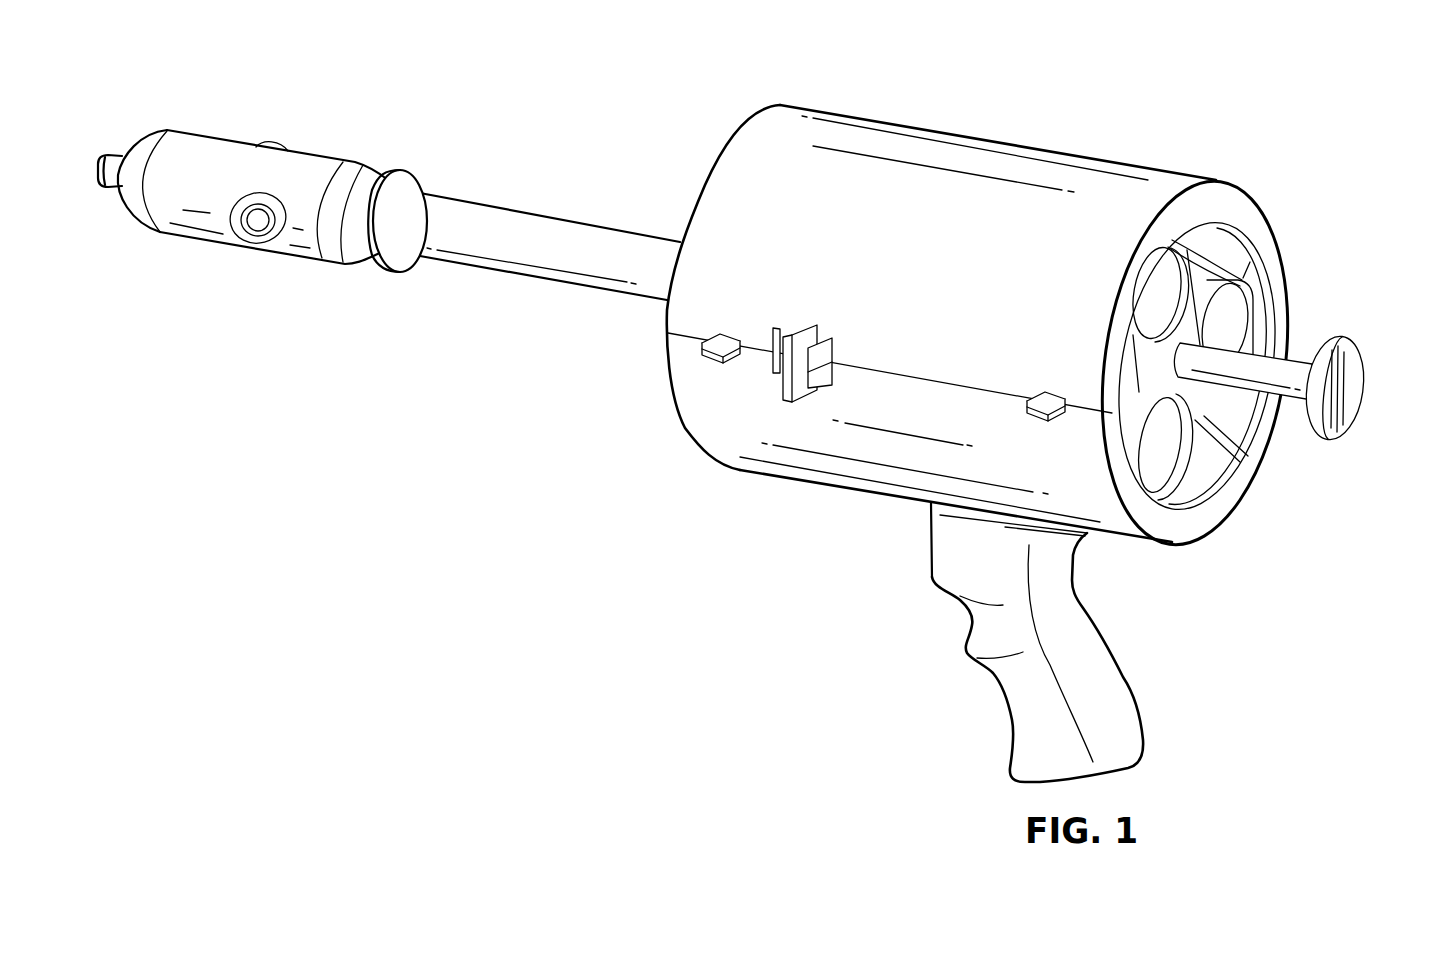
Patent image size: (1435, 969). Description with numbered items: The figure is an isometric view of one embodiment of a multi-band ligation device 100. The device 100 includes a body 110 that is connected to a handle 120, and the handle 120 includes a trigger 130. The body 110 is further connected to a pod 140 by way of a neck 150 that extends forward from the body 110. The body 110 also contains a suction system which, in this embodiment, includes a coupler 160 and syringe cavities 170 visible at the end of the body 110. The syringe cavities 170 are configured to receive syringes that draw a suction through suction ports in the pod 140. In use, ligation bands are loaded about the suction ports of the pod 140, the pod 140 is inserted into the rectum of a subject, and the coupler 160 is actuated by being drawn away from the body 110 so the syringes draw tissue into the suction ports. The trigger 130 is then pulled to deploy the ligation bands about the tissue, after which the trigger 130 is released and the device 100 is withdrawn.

The multi-band ligation device 100 is at (1334, 119).
The body 110 is at (1222, 505).
The handle 120 is at (1130, 690).
The trigger 130 is at (930, 548).
The pod 140 is at (215, 135).
The neck 150 is at (527, 213).
The coupler 160 is at (1357, 380).
The syringe cavities 170 is at (1240, 303).